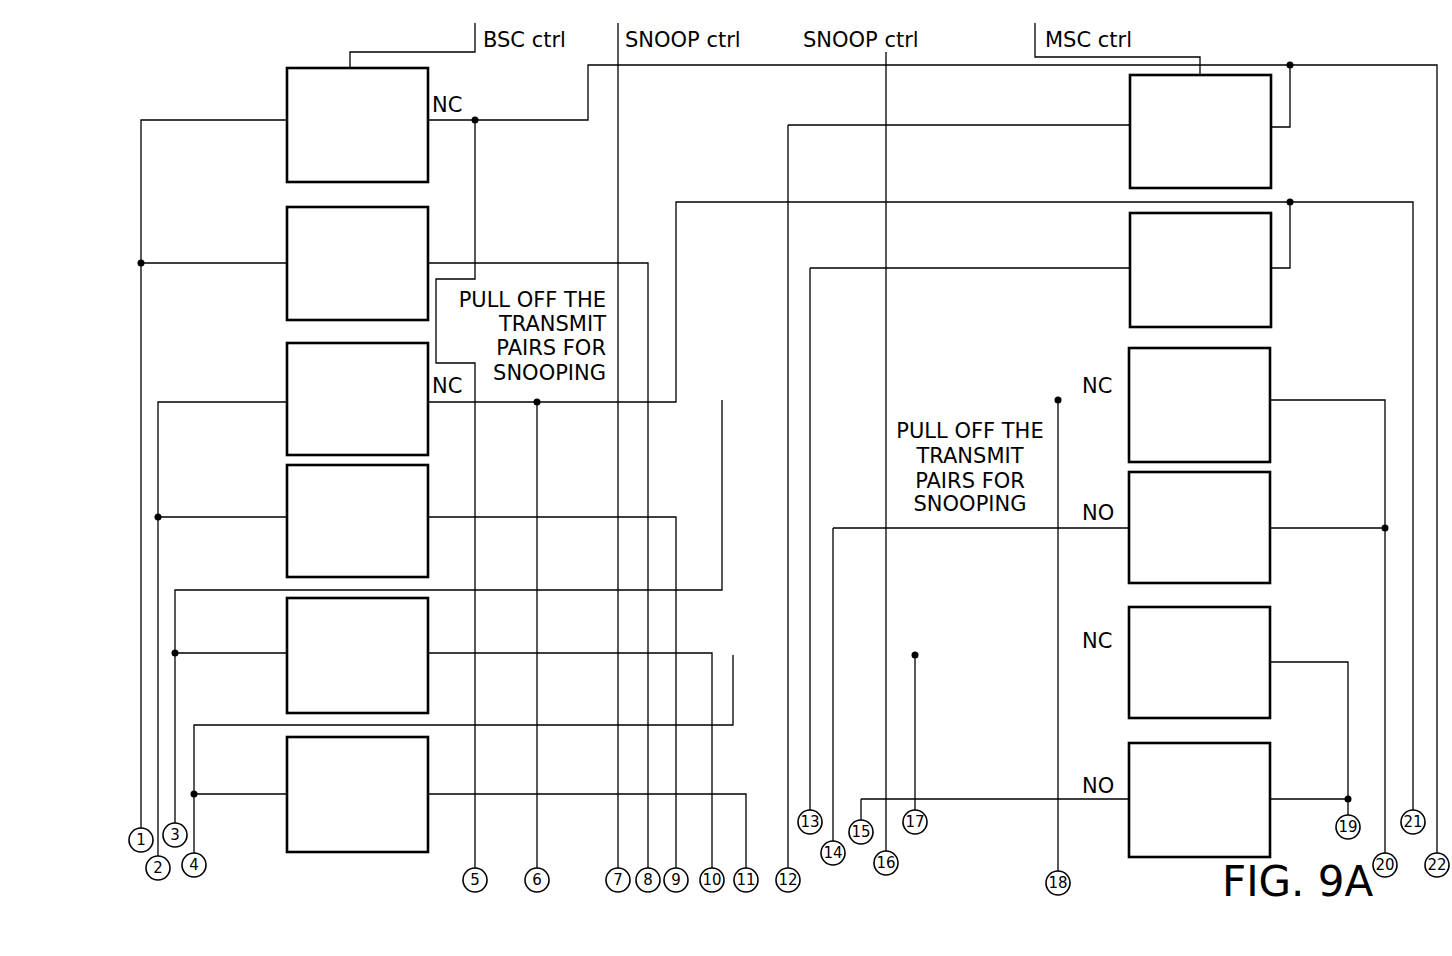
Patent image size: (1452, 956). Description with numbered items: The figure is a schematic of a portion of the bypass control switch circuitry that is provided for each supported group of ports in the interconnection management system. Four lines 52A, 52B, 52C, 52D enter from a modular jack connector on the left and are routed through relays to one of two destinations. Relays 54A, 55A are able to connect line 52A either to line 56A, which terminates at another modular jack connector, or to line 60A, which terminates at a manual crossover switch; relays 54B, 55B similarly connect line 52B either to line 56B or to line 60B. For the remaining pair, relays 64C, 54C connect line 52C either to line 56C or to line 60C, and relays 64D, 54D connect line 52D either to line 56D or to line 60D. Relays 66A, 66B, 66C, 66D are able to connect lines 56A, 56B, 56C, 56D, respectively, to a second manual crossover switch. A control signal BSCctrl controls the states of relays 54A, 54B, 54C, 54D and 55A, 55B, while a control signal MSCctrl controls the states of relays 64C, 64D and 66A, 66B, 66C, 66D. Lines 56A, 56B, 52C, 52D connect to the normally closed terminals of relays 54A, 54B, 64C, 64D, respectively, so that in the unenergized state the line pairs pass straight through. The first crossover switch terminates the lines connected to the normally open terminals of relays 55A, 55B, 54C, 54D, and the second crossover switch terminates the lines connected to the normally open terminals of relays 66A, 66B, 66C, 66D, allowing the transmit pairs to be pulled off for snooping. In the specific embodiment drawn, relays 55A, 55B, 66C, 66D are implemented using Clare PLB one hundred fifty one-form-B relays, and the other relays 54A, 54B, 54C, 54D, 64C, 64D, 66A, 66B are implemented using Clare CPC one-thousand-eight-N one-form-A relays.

The line 52A is at (141, 243).
The line 52B is at (160, 465).
The line 52C is at (176, 645).
The line 52D is at (196, 850).
The relay 54A is at (287, 92).
The relay 54B is at (287, 372).
The relay 54C is at (287, 622).
The relay 54D is at (287, 776).
The relay 55A is at (287, 232).
The relay 55B is at (287, 498).
The line 56A is at (1437, 180).
The line 56B is at (1413, 270).
The line 56C is at (1385, 468).
The line 56D is at (1348, 745).
The line 60A is at (500, 262).
The line 60B is at (507, 500).
The line 60C is at (507, 637).
The line 60D is at (494, 791).
The relay 64C is at (1129, 370).
The relay 64D is at (1129, 623).
The relay 66A is at (1130, 117).
The relay 66B is at (1130, 249).
The relay 66C is at (1129, 486).
The relay 66D is at (1129, 771).